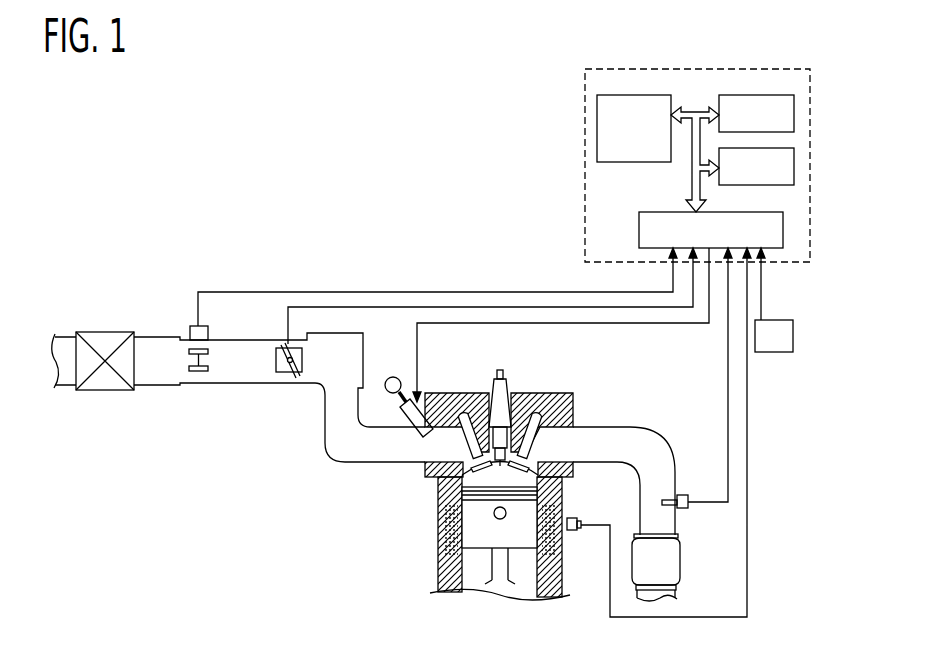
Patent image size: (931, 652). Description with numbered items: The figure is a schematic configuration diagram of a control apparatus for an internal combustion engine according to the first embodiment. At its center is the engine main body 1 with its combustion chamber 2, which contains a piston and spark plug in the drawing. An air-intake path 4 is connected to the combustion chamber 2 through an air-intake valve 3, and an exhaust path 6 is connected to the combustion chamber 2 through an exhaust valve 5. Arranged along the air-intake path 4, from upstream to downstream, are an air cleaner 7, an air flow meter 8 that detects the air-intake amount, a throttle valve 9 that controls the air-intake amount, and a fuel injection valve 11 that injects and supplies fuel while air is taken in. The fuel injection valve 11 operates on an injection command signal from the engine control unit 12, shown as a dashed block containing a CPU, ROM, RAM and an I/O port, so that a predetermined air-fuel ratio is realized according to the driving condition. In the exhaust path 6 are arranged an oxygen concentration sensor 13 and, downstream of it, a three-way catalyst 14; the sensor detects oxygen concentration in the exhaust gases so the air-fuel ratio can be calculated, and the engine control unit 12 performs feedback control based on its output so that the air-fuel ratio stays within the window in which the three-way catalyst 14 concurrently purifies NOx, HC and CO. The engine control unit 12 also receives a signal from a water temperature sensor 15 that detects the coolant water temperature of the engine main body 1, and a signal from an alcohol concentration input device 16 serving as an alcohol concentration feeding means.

The engine main body 1 is at (438, 555).
The combustion chamber 2 is at (482, 478).
The air-intake valve 3 is at (468, 400).
The air-intake path 4 is at (346, 451).
The exhaust valve 5 is at (542, 404).
The exhaust path 6 is at (652, 432).
The air cleaner 7 is at (110, 336).
The air flow meter 8 is at (190, 327).
The throttle valve 9 is at (292, 383).
The fuel injection valve 11 is at (410, 413).
The engine control unit 12 is at (584, 170).
The oxygen concentration sensor 13 is at (678, 494).
The three-way catalyst 14 is at (676, 562).
The water temperature sensor 15 is at (577, 516).
The alcohol concentration input device 16 is at (774, 336).